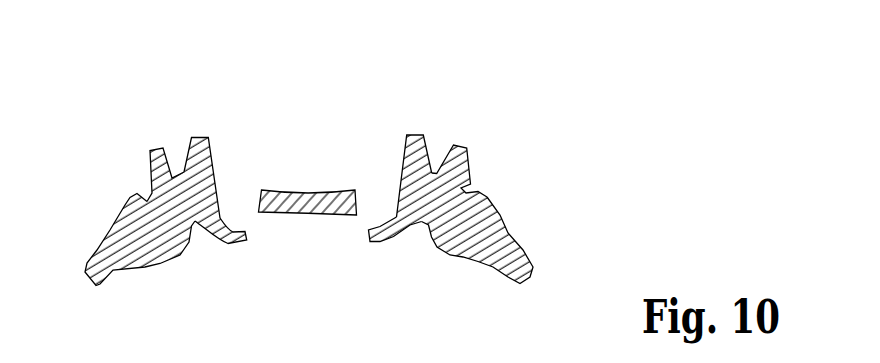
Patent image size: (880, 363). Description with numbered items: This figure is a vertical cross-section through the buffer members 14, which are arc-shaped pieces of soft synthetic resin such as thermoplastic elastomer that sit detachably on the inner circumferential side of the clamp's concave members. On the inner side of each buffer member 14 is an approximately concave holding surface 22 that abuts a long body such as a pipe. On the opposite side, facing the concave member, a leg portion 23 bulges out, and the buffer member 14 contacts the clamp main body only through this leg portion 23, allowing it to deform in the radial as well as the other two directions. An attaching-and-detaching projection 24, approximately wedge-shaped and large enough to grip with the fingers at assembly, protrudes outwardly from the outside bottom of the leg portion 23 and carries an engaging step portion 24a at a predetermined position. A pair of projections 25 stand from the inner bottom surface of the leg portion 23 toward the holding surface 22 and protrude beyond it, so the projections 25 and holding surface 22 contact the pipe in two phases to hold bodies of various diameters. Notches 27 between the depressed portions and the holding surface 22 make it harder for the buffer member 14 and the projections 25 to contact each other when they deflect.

The buffer member 14 is at (327, 62).
The holding surface 22 is at (308, 198).
The leg portion 23 is at (237, 242).
The attaching-and-detaching projection 24 is at (113, 268).
The engaging step portion 24a is at (146, 200).
The projection 25 is at (203, 137).
The notch 27 is at (357, 225).